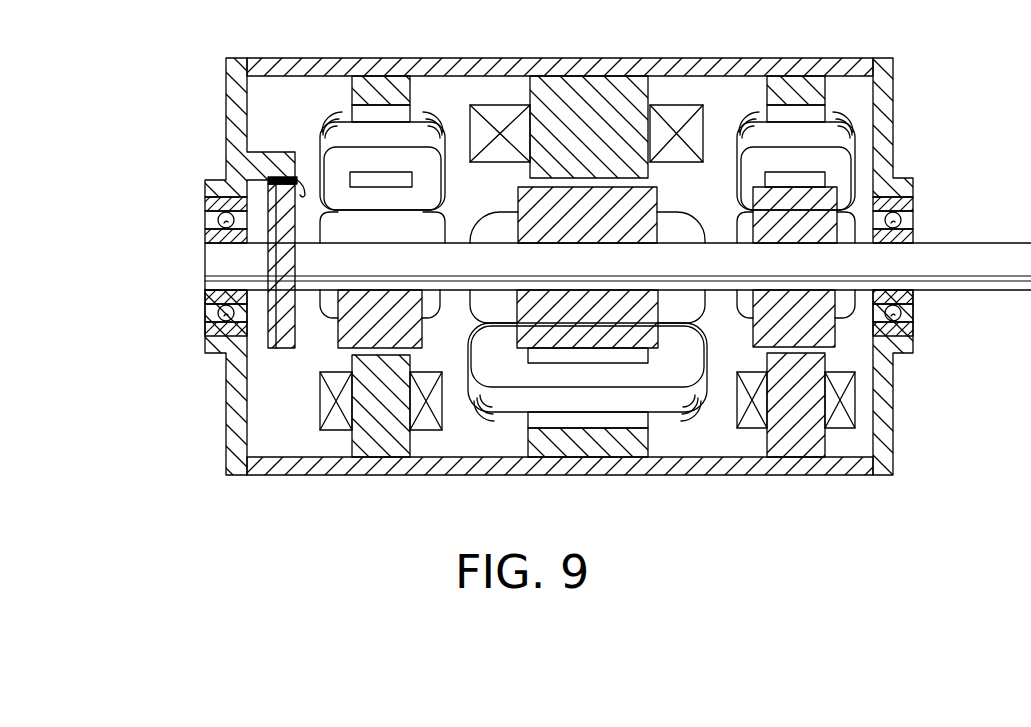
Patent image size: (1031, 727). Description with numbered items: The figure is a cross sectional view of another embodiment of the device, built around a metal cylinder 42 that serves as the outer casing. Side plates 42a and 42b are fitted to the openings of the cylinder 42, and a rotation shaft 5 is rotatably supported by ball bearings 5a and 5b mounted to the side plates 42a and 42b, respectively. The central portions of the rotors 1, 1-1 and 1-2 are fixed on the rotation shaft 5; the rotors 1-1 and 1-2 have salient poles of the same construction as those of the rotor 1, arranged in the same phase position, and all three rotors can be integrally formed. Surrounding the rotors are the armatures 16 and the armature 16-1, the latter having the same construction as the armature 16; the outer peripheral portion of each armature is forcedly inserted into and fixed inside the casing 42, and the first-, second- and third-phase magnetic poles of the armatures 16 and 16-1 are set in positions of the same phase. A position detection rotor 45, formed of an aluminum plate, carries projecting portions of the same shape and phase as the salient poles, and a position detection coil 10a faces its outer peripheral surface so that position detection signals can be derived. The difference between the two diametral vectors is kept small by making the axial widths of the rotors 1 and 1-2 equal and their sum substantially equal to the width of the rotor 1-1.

The metal cylinder 42 is at (597, 58).
The side plate 42a is at (229, 116).
The side plate 42b is at (885, 107).
The position detection coil 10a is at (305, 194).
The ball bearing 5a is at (209, 219).
The ball bearing 5b is at (913, 203).
The rotation shaft 5 is at (960, 243).
The position detection rotor 45 is at (272, 345).
The armature 16 is at (403, 447).
The armature 16-1 is at (767, 440).
The rotor 1 is at (412, 336).
The rotor 1-1 is at (668, 192).
The rotor 1-2 is at (757, 326).